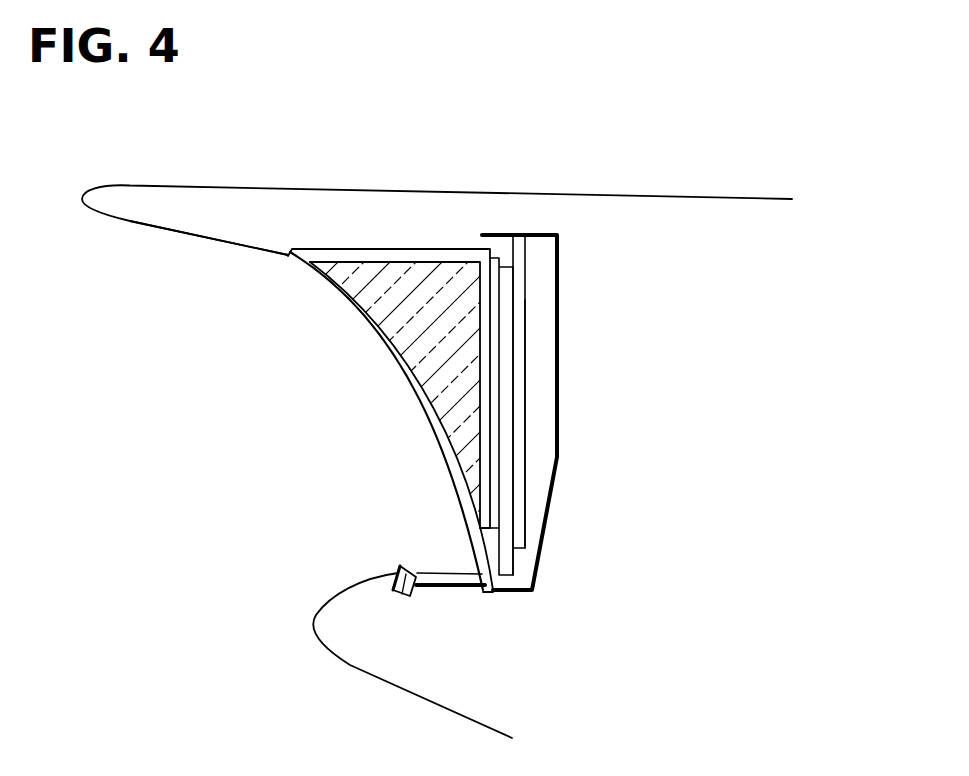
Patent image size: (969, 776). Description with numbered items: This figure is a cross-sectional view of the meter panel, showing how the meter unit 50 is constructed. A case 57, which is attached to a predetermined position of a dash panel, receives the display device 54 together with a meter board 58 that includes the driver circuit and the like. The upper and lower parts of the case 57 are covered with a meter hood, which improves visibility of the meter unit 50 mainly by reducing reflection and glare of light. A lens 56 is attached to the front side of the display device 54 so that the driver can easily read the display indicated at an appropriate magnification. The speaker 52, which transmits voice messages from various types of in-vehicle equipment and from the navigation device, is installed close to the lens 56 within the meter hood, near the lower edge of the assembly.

The meter unit 50 is at (547, 156).
The speaker 52 is at (400, 597).
The display device 54 is at (507, 313).
The lens 56 is at (380, 338).
The case 57 is at (558, 377).
The meter board 58 is at (527, 482).